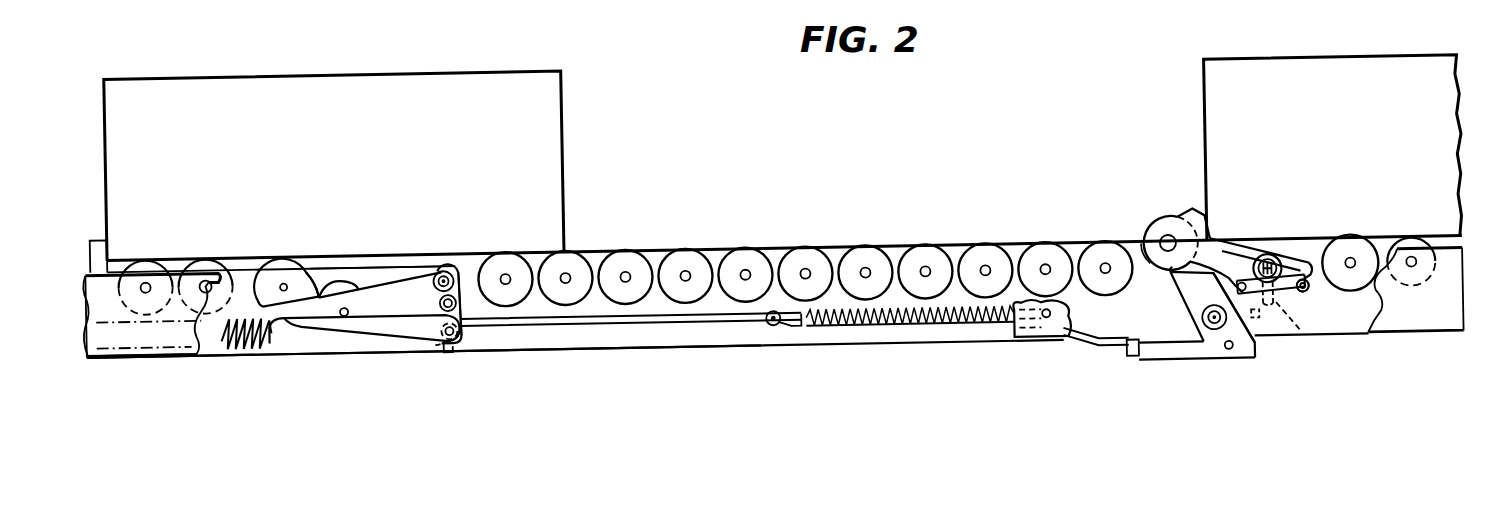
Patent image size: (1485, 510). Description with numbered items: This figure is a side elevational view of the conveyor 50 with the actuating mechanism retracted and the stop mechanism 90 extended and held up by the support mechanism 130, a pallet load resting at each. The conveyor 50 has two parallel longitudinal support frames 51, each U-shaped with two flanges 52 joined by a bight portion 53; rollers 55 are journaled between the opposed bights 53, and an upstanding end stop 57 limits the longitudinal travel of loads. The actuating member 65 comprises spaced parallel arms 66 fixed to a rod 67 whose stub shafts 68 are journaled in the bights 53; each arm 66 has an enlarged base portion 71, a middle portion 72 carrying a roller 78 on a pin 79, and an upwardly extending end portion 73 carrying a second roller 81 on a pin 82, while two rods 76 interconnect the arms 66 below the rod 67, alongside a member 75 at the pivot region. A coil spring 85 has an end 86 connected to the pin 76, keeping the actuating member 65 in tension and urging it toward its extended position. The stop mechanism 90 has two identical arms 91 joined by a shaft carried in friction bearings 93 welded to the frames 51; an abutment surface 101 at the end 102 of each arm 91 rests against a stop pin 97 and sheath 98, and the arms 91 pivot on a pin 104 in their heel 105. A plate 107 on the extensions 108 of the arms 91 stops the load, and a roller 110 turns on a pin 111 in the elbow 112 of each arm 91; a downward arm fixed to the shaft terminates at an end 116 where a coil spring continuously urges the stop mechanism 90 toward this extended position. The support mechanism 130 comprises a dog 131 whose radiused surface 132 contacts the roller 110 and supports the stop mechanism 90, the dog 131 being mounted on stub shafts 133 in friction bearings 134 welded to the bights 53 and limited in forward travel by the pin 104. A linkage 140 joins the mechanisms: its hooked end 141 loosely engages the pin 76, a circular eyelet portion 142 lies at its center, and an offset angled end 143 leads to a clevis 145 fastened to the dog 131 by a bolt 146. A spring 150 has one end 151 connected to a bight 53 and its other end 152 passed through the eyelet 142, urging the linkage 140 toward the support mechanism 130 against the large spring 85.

The conveyor 50 is at (905, 182).
The support frame 51 is at (622, 352).
The flange 52 is at (170, 358).
The bight portion 53 is at (87, 337).
The roller 55 is at (188, 263).
The end stop 57 is at (98, 238).
The actuating member 65 is at (368, 274).
The arm 66 is at (395, 346).
The rod 67 is at (443, 268).
The stub shaft 68 is at (452, 292).
The plate edge 71 is at (467, 307).
The middle portion 72 is at (313, 338).
The upwardly extending end portion 73 is at (314, 288).
The mounting plate 75 is at (462, 272).
The rod (pin) 76 is at (456, 345).
The roller 78 is at (345, 280).
The pin 79 is at (343, 316).
The second roller 81 is at (272, 258).
The pin 82 is at (284, 283).
The coil spring 85 is at (252, 347).
The end of coil spring 86 is at (449, 358).
The stop mechanism 90 is at (1168, 196).
The arm 91 is at (1241, 283).
The friction bearing 93 is at (1285, 278).
The stop pin 97 is at (1309, 290).
The sheath 98 is at (1301, 292).
The abutment surface 101 is at (1288, 283).
The end of enlarged base 102 is at (1332, 247).
The pin 104 is at (1259, 256).
The heel 105 is at (1250, 337).
The plate 107 is at (1207, 215).
The extension 108 is at (1186, 213).
The roller 110 is at (1150, 237).
The pin 111 is at (1167, 242).
The elbow 112 is at (1155, 252).
The end of arm 116 is at (1298, 338).
The support mechanism 130 is at (1160, 304).
The dog 131 is at (1187, 303).
The radiused surface 132 is at (1170, 274).
The stub shaft 133 is at (1204, 323).
The friction bearing 134 is at (1210, 325).
The linkage 140 is at (743, 334).
The hooked end 141 is at (442, 348).
The circular eyelet portion 142 is at (784, 330).
The offset angled end 143 is at (1115, 342).
The clevis 145 is at (1147, 352).
The bolt 146 is at (1228, 353).
The spring 150 is at (952, 327).
The end of spring 151 is at (1048, 339).
The end of spring 152 is at (770, 331).